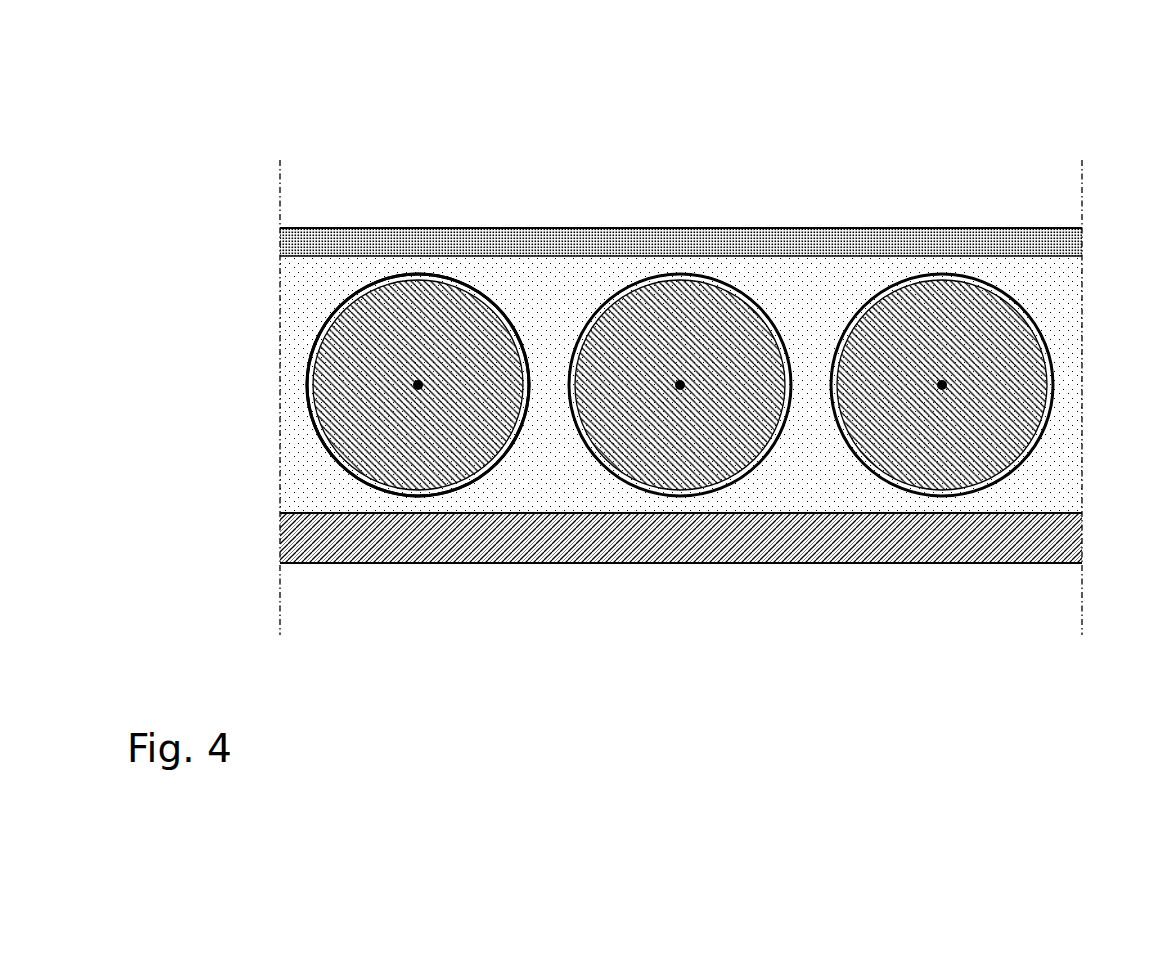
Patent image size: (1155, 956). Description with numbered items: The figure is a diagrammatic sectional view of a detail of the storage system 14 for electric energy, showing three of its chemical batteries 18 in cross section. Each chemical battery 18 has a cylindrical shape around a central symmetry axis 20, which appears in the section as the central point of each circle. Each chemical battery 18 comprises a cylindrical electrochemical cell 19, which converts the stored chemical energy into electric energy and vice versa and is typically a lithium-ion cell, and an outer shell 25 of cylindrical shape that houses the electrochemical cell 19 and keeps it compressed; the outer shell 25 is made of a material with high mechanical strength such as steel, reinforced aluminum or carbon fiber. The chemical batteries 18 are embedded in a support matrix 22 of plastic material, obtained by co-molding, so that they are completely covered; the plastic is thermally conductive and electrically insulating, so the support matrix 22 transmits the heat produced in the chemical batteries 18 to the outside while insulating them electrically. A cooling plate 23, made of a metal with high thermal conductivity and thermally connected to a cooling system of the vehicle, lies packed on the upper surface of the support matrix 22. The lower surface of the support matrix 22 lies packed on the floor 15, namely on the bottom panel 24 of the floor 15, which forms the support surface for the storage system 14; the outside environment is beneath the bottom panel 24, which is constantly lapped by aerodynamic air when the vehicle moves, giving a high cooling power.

The storage system 14 is at (654, 372).
The floor 15 is at (436, 603).
The chemical battery 18 is at (378, 326).
The electrochemical cell 19 is at (405, 345).
The central symmetry axis 20 is at (310, 412).
The support matrix 22 is at (814, 335).
The cooling plate 23 is at (556, 250).
The bottom panel 24 is at (548, 543).
The outer shell 25 is at (350, 290).